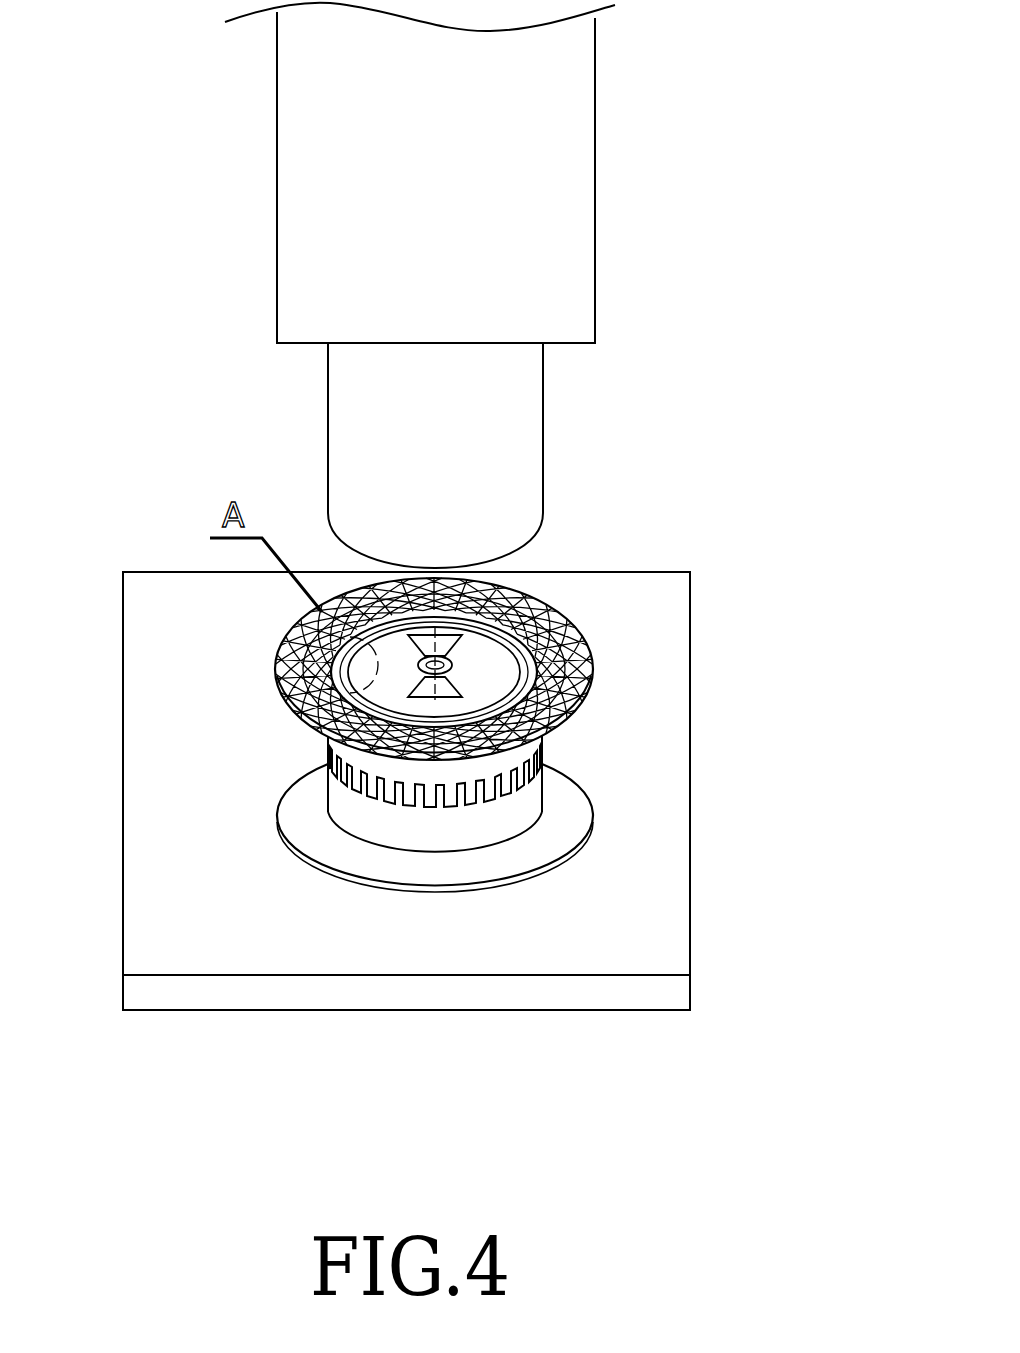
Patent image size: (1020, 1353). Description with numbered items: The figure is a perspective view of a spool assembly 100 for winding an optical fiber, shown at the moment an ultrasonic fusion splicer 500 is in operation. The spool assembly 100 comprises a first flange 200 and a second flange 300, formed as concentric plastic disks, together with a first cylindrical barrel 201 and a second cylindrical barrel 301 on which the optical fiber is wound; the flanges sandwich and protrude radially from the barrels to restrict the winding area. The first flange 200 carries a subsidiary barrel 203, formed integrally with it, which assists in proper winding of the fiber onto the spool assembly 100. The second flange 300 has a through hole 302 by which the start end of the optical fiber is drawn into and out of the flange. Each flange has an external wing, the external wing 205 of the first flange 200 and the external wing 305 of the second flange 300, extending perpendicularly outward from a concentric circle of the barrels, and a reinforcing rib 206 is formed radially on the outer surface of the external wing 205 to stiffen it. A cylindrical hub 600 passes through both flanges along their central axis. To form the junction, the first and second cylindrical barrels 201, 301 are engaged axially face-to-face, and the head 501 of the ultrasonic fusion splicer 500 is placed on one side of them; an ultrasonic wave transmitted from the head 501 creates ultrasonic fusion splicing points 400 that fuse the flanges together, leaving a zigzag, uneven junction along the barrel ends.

The spool assembly 100 is at (347, 585).
The first flange 200 is at (590, 713).
The first cylindrical barrel 201 is at (537, 778).
The subsidiary barrel 203 is at (593, 683).
The external wing 205 is at (547, 593).
The reinforcing rib 206 is at (520, 662).
The second flange 300 is at (347, 887).
The second cylindrical barrel 301 is at (433, 830).
The through hole 302 is at (328, 793).
The external wing 305 is at (493, 893).
The ultrasonic fusion splicing point 400 is at (510, 790).
The ultrasonic fusion splicer 500 is at (312, 135).
The head 501 is at (483, 438).
The cylindrical hub 600 is at (452, 625).